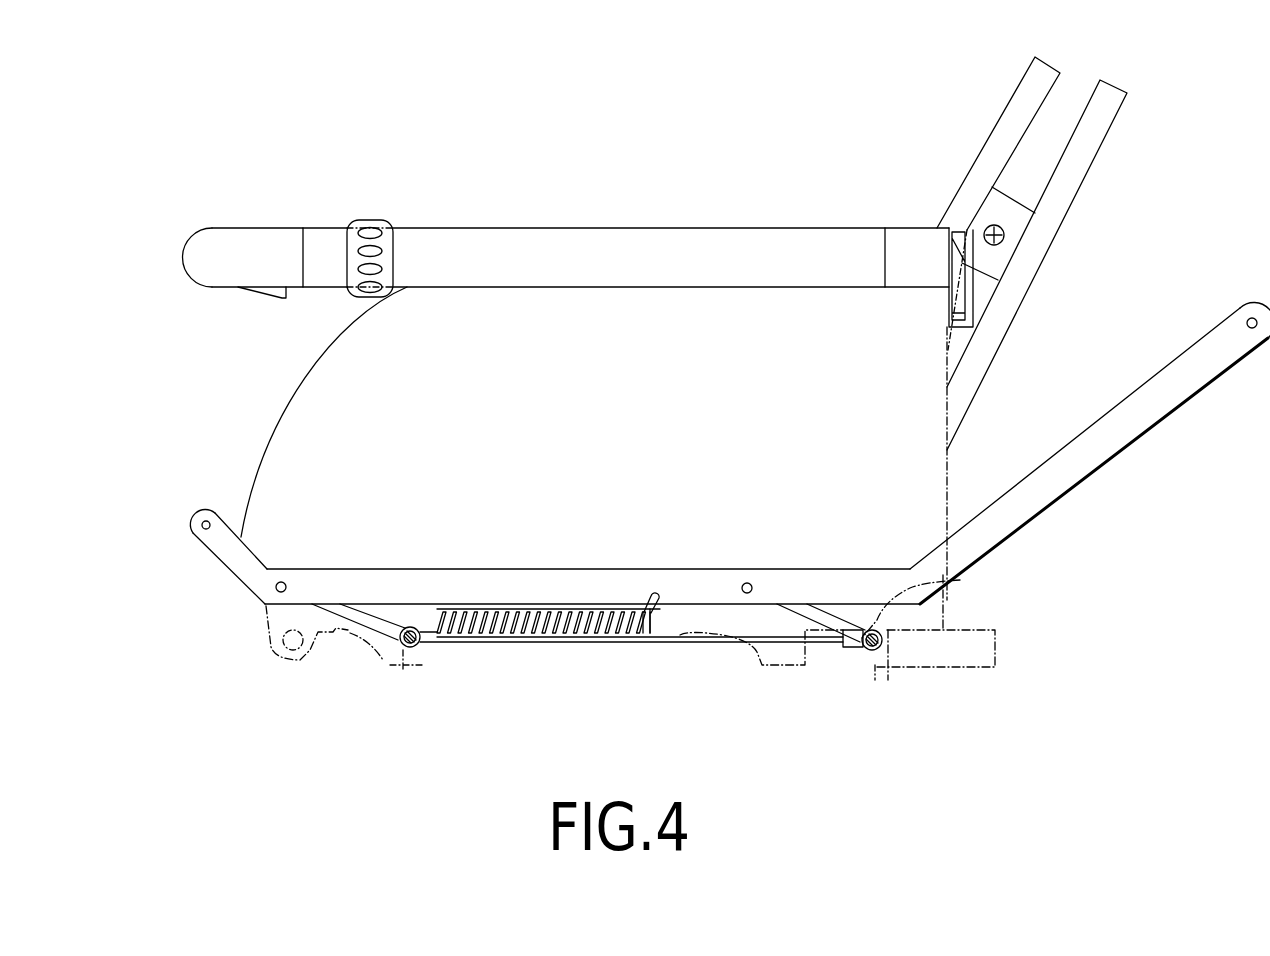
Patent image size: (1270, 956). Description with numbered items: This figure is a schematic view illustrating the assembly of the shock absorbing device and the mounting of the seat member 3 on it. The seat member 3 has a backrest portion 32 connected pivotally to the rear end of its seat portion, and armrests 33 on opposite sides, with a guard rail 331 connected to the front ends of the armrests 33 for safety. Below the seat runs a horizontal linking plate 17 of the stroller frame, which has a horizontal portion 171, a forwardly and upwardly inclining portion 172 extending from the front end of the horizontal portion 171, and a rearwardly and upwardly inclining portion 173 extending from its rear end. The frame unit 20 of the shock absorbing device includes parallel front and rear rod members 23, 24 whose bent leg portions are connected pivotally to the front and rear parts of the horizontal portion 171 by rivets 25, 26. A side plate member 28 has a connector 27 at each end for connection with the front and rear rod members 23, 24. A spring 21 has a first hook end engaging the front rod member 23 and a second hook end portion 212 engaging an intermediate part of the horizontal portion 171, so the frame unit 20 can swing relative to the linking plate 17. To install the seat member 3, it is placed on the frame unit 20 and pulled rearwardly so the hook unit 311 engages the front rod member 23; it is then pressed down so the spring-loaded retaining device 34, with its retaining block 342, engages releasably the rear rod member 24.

The seat member 3 is at (550, 226).
The armrests 33 is at (799, 250).
The guard rail 331 is at (256, 272).
The backrest portion 32 is at (1073, 183).
The linking plate 17 is at (805, 569).
The horizontal portion 171 is at (657, 590).
The forwardly and upwardly inclining portion 172 is at (230, 552).
The rearwardly and upwardly inclining portion 173 is at (1092, 450).
The rivet 25 is at (281, 582).
The rivet 26 is at (747, 583).
The connector 27 is at (947, 583).
The spring 21 is at (525, 618).
The frame unit 20 is at (507, 644).
The side plate member 28 is at (598, 642).
The second hook end portion 212 is at (658, 605).
The front rod member 23 is at (432, 640).
The rear rod member 24 is at (863, 650).
The hook unit 311 is at (403, 672).
The spring-loaded retaining device 34 is at (930, 668).
The retaining block 342 is at (875, 680).